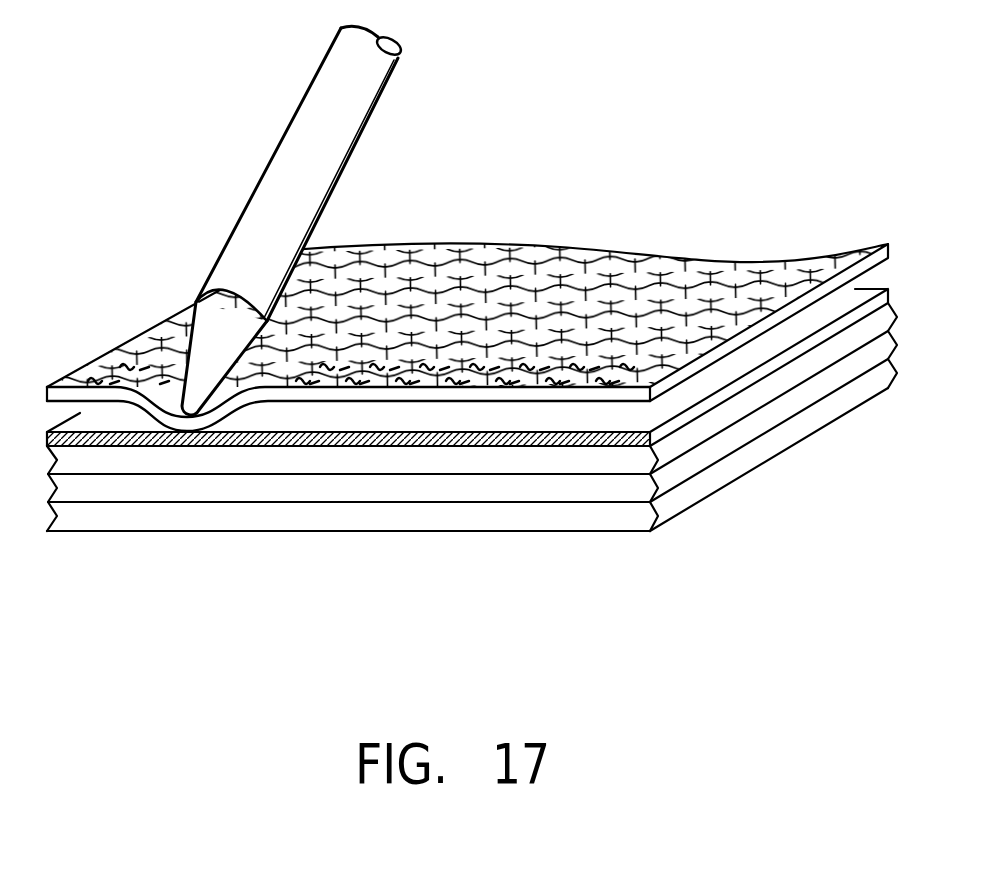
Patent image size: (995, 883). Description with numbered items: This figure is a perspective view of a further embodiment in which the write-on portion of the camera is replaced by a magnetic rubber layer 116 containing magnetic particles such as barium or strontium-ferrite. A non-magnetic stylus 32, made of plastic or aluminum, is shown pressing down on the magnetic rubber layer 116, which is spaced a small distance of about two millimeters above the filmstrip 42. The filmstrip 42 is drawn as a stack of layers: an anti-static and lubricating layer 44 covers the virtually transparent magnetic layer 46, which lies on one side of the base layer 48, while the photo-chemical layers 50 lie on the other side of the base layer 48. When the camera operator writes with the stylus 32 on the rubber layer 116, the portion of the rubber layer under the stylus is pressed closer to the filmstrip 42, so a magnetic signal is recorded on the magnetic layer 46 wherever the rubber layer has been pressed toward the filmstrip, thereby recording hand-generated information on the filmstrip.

The stylus 32 is at (372, 128).
The magnetic rubber layer 116 is at (140, 317).
The filmstrip 42 is at (472, 479).
The anti-static and lubricating layer 44 is at (677, 402).
The magnetic layer 46 is at (97, 462).
The base layer 48 is at (225, 492).
The photo-chemical layers 50 is at (372, 518).